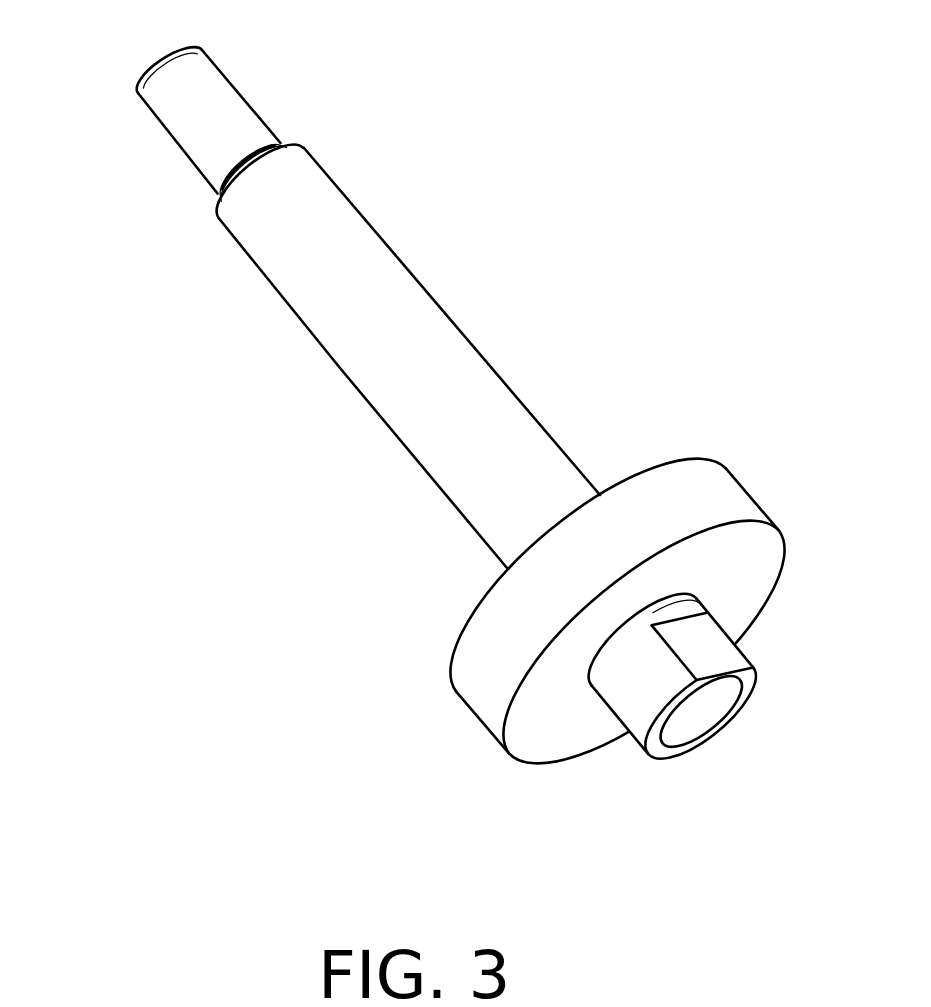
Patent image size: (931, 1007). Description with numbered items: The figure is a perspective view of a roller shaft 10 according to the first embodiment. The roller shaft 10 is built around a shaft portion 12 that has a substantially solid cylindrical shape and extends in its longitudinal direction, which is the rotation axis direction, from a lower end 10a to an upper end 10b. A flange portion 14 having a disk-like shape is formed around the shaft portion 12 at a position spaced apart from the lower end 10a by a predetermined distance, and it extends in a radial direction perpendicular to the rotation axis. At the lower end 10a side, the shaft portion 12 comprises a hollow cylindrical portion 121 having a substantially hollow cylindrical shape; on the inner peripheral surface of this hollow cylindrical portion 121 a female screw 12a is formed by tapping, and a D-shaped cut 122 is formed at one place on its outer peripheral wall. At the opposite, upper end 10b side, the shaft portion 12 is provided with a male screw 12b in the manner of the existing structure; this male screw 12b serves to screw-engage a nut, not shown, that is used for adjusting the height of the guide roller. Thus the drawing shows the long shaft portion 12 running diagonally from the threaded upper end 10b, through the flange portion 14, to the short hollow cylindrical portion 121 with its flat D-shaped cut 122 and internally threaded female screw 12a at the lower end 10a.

The roller shaft 10 is at (283, 340).
The lower end 10a is at (743, 700).
The upper end 10b is at (160, 65).
The shaft portion 12 is at (383, 396).
The female screw 12a is at (699, 722).
The male screw 12b is at (154, 109).
The flange portion 14 is at (468, 677).
The hollow cylindrical portion 121 is at (632, 710).
The D-shaped cut 122 is at (713, 633).